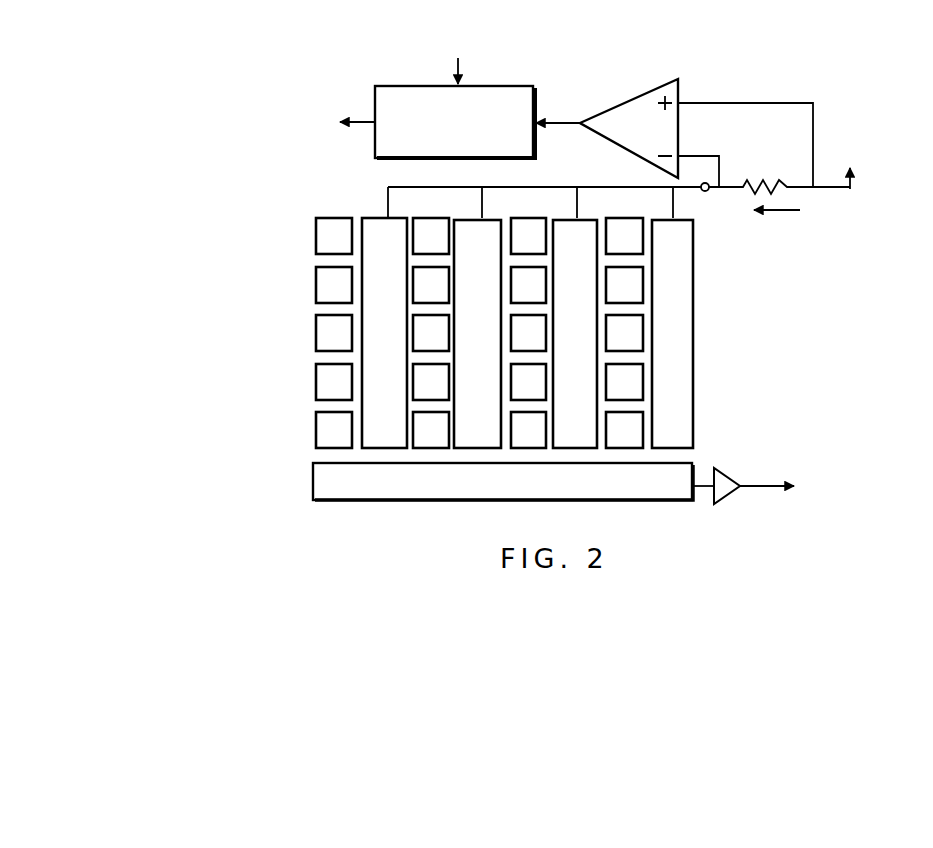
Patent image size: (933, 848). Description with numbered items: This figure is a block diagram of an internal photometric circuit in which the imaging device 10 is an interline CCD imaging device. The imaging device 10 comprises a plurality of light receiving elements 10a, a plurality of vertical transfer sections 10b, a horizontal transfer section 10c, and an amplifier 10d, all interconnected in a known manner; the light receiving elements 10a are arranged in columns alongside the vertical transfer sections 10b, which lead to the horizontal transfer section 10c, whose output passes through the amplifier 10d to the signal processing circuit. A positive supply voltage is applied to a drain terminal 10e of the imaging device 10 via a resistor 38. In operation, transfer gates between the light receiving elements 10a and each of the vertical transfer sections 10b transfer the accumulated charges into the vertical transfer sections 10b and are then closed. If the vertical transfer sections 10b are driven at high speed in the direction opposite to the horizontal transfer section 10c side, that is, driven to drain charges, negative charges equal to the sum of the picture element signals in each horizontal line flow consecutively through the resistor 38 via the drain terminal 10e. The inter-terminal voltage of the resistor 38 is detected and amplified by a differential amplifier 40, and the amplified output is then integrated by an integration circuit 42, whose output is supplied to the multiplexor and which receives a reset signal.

The imaging device 10 is at (507, 353).
The light receiving elements 10a is at (657, 396).
The vertical transfer sections 10b is at (694, 302).
The horizontal transfer section 10c is at (313, 487).
The amplifier 10d is at (729, 477).
The drain terminal 10e is at (708, 193).
The resistor 38 is at (767, 183).
The differential amplifier 40 is at (630, 100).
The integration circuit 42 is at (537, 78).